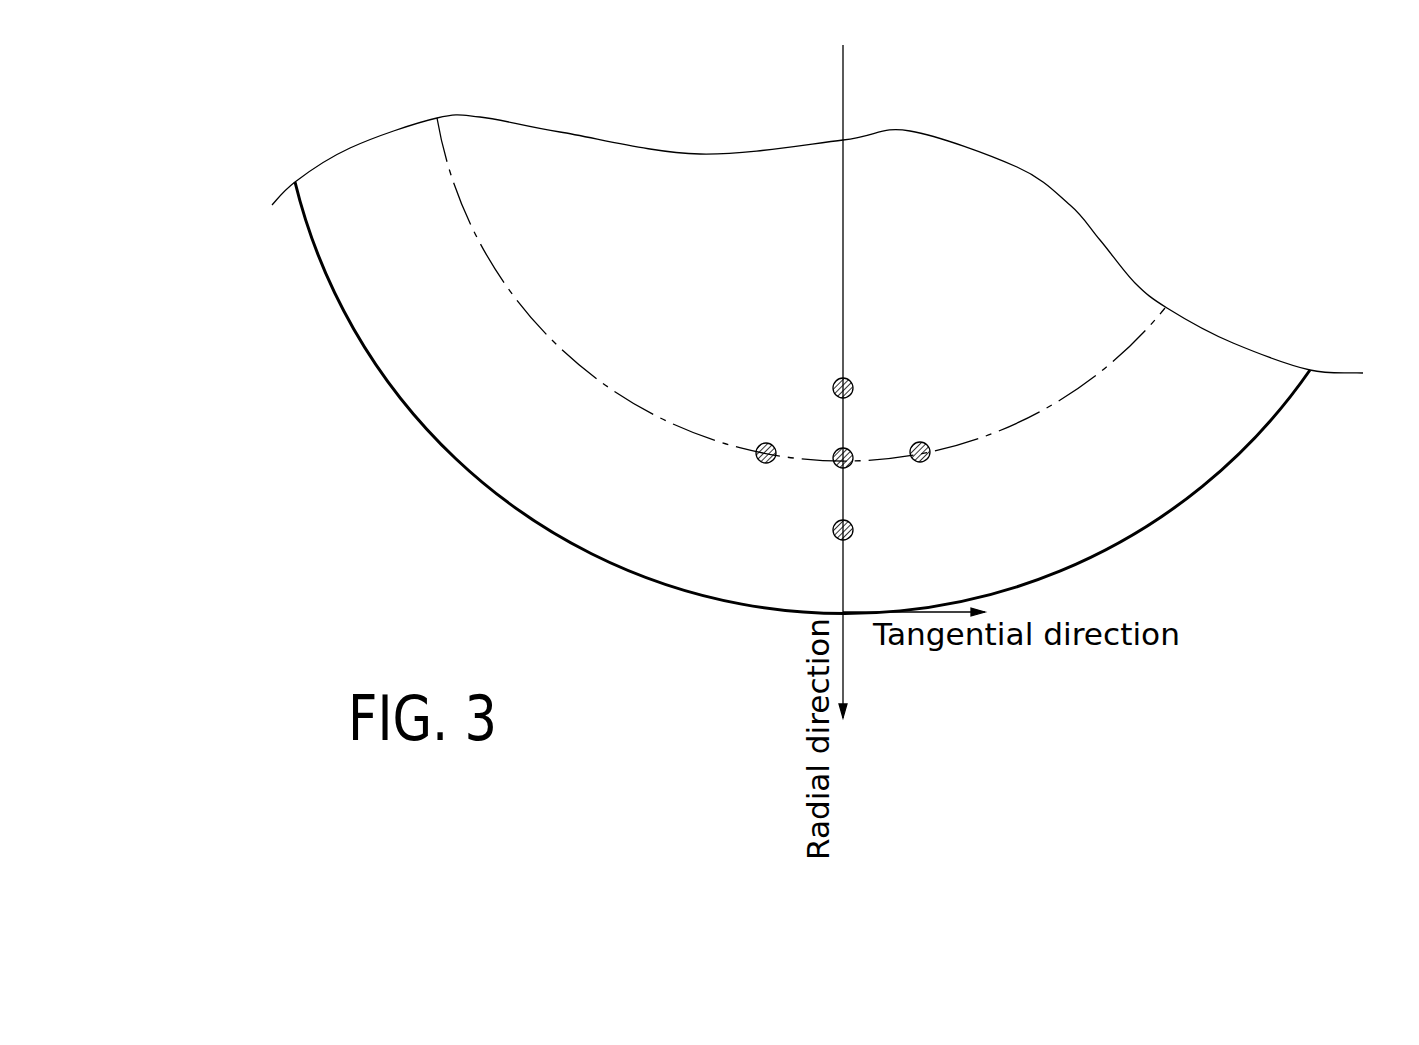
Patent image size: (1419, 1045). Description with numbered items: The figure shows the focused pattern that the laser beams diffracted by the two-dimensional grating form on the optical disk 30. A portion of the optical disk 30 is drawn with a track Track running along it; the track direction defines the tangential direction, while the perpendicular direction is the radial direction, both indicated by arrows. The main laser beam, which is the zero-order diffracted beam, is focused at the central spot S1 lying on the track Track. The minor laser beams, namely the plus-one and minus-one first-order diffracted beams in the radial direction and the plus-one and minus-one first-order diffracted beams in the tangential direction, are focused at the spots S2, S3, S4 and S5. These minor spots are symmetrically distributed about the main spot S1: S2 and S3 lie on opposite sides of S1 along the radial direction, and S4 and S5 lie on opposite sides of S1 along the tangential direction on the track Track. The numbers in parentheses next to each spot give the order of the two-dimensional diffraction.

The optical disk 30 is at (460, 465).
The main laser beam spot S1 is at (838, 451).
The first-order minor laser beam spot S2 is at (853, 387).
The first-order minor laser beam spot S3 is at (851, 535).
The first-order minor laser beam spot S4 is at (930, 457).
The first-order minor laser beam spot S5 is at (757, 452).
The track Track is at (1145, 343).